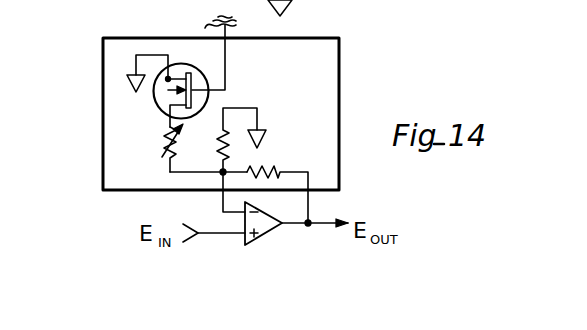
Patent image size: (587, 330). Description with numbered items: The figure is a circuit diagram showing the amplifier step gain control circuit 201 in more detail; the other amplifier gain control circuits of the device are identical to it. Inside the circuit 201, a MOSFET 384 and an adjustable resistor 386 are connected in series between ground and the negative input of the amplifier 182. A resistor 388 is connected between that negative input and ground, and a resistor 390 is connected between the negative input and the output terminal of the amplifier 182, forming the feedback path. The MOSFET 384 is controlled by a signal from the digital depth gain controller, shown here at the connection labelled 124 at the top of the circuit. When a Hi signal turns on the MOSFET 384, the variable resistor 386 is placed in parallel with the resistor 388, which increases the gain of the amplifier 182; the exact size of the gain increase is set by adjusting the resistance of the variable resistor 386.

The chassis ground 124 is at (203, 23).
The amplifier step gain control circuit 201 is at (339, 97).
The MOSFET 384 is at (158, 114).
The adjustable resistor 386 is at (162, 154).
The resistor 388 is at (220, 130).
The resistor 390 is at (268, 163).
The amplifier 182 is at (270, 237).